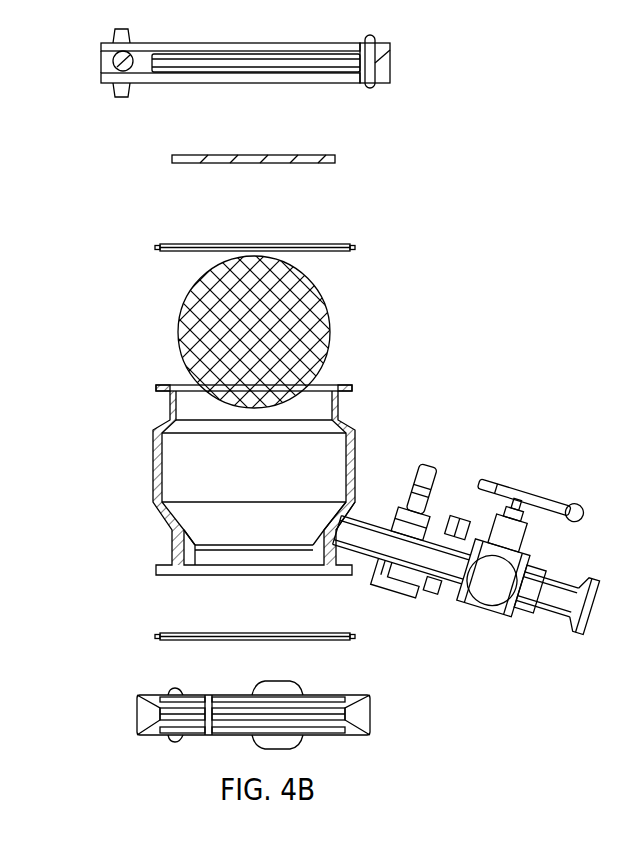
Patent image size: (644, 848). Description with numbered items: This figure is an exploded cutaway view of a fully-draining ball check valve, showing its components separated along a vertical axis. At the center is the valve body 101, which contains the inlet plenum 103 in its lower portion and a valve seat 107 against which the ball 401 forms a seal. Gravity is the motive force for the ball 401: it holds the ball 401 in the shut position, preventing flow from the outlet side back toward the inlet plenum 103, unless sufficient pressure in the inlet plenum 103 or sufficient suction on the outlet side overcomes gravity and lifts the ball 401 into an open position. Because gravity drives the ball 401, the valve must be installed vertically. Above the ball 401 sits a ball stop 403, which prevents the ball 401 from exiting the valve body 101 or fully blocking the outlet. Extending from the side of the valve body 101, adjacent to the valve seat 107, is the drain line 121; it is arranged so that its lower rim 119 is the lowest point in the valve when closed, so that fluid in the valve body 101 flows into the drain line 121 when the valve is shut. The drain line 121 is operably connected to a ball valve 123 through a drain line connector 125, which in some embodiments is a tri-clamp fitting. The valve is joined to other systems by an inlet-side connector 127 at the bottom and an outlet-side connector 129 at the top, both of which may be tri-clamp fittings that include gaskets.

The valve body 101 is at (153, 467).
The inlet plenum 103 is at (250, 560).
The valve seat 107 is at (187, 530).
The lower rim 119 is at (318, 523).
The drain line 121 is at (385, 572).
The ball valve 123 is at (490, 638).
The drain line connector 125 is at (447, 466).
The inlet-side connector 127 is at (380, 717).
The outlet-side connector 129 is at (402, 66).
The ball 401 is at (342, 331).
The ball stop 403 is at (346, 157).